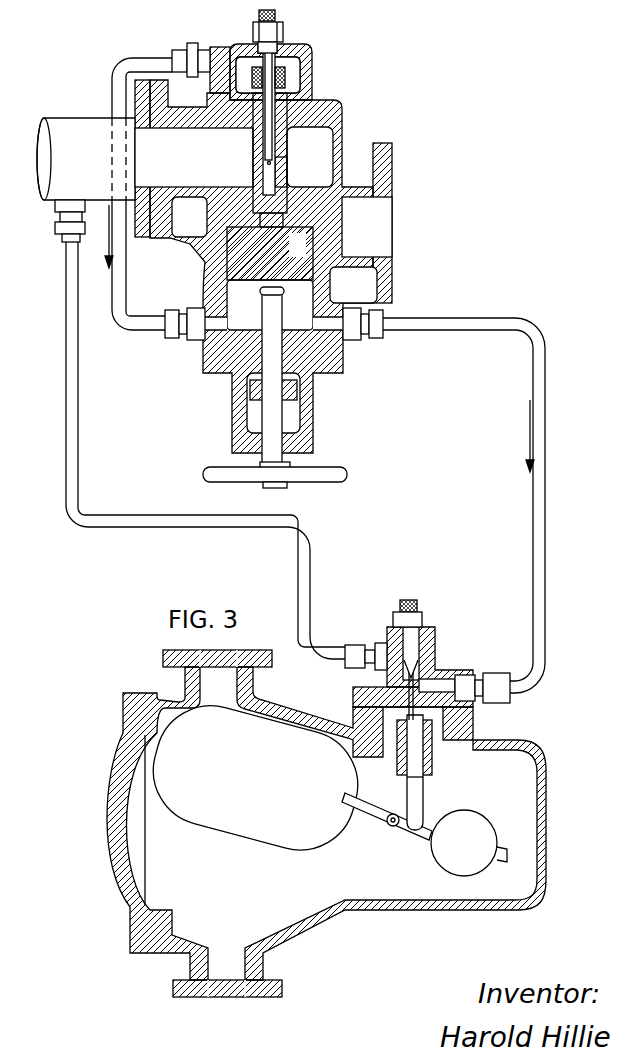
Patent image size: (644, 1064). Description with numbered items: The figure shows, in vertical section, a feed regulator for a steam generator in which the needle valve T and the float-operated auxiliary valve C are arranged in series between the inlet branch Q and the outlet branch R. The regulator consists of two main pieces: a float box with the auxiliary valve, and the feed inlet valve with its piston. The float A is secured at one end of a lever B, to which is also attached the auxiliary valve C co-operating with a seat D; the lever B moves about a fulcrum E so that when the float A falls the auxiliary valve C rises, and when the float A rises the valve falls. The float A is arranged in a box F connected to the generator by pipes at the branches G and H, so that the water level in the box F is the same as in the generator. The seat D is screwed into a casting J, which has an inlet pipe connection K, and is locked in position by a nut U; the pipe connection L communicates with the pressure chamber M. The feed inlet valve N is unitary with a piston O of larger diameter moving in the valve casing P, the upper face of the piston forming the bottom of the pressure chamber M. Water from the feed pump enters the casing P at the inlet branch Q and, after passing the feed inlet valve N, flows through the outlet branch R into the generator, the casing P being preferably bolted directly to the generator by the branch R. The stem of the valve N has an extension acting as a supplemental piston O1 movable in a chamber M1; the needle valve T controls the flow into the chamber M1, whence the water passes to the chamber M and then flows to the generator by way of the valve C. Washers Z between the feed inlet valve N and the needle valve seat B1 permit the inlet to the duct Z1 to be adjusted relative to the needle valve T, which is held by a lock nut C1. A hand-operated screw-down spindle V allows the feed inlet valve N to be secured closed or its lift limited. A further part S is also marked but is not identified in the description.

The lock nut C1 is at (283, 32).
The needle valve T is at (269, 62).
The needle valve seat B1 is at (279, 67).
The supplemental chamber M1 is at (301, 87).
The washers Z is at (249, 80).
The packing ring S is at (284, 76).
The duct Z1 is at (272, 133).
The supplemental piston O1 is at (310, 157).
The outlet branch R is at (215, 160).
The feed inlet valve N is at (289, 182).
The inlet branch Q is at (375, 230).
The valve casing P is at (210, 207).
The piston O is at (270, 253).
The pressure chamber M is at (274, 305).
The hand-operated screw-down spindle V is at (272, 375).
The inlet pipe connection K is at (540, 375).
The pipe connection L is at (103, 517).
The casting J is at (392, 645).
The nut U is at (421, 620).
The auxiliary valve seat D is at (421, 668).
The auxiliary valve C is at (420, 688).
The branch H is at (217, 665).
The float A is at (255, 777).
The lever B is at (366, 822).
The fulcrum E is at (393, 829).
The box F is at (430, 904).
The branch G is at (227, 982).